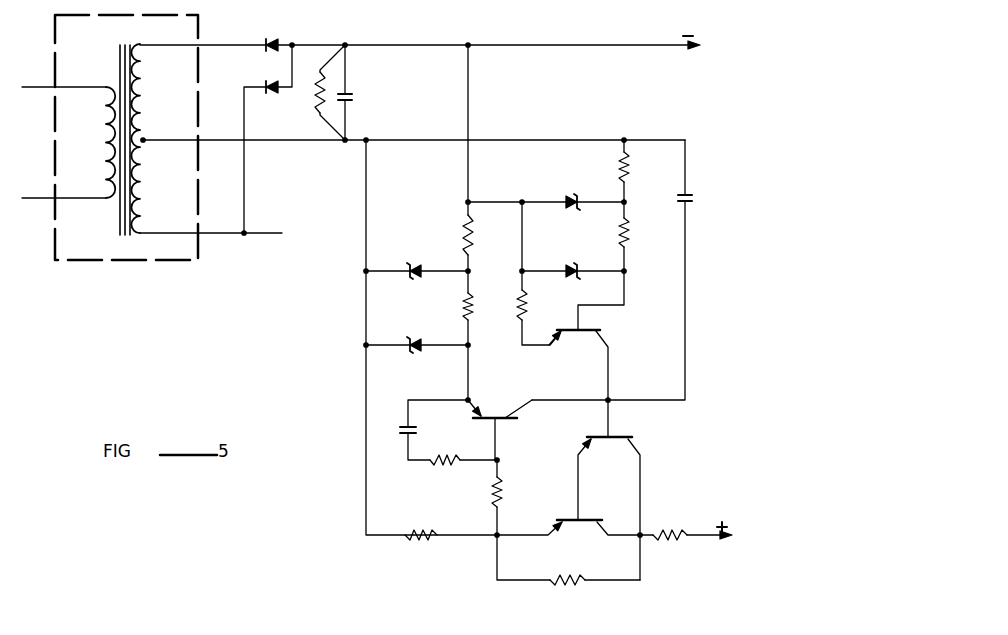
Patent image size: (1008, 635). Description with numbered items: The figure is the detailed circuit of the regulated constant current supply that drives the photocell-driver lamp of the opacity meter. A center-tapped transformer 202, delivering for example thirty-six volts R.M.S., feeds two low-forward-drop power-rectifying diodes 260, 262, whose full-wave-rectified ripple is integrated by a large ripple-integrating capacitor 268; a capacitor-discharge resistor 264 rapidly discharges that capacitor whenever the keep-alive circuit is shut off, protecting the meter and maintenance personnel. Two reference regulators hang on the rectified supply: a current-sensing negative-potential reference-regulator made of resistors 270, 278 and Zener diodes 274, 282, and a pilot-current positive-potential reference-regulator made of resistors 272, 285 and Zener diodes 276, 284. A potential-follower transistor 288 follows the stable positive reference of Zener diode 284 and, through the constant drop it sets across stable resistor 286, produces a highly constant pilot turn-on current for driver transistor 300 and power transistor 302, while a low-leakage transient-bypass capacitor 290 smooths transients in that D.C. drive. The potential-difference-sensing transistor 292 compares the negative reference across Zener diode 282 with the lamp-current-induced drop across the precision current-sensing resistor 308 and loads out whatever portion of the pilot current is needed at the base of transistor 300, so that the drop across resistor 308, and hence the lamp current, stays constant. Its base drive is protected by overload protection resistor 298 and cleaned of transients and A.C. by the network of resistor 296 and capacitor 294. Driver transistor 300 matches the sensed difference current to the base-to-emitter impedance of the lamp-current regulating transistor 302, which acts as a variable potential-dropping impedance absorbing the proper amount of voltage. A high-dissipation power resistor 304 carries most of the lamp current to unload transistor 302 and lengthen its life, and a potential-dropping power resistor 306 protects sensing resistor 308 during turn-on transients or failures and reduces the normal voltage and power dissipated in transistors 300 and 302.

The transformer 202 is at (148, 260).
The power-rectifying diode 260 is at (273, 39).
The power-rectifying diode 262 is at (242, 63).
The capacitor-discharge resistor 264 is at (272, 92).
The ripple-integrating capacitor 268 is at (352, 97).
The resistor 270 is at (462, 236).
The resistor 272 is at (632, 166).
The Zener diode 274 is at (413, 265).
The Zener diode 276 is at (575, 197).
The resistor 278 is at (462, 300).
The Zener potential-reference diode 282 is at (410, 353).
The Zener potential-reference regulating diode 284 is at (575, 265).
The resistor 285 is at (630, 228).
The stable resistor 286 is at (527, 300).
The positive-reference potential-follower transistor 288 is at (600, 326).
The transient-bypass capacitor 290 is at (692, 198).
The potential-difference-sensing transistor 292 is at (497, 414).
The low-leakage capacitor 294 is at (434, 430).
The resistor 296 is at (432, 465).
The base drive overload protection resistor 298 is at (492, 489).
The driver transistor 300 is at (618, 435).
The lamp-current regulating power transistor 302 is at (560, 517).
The power resistor 304 is at (565, 585).
The potential-dropping power resistor 306 is at (672, 530).
The current-sensing resistor 308 is at (413, 540).